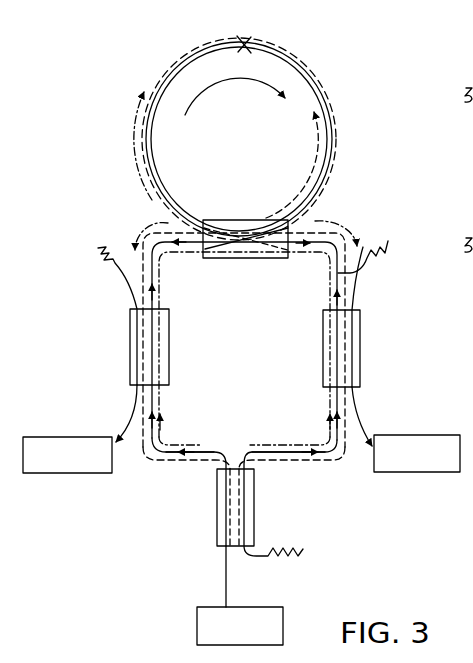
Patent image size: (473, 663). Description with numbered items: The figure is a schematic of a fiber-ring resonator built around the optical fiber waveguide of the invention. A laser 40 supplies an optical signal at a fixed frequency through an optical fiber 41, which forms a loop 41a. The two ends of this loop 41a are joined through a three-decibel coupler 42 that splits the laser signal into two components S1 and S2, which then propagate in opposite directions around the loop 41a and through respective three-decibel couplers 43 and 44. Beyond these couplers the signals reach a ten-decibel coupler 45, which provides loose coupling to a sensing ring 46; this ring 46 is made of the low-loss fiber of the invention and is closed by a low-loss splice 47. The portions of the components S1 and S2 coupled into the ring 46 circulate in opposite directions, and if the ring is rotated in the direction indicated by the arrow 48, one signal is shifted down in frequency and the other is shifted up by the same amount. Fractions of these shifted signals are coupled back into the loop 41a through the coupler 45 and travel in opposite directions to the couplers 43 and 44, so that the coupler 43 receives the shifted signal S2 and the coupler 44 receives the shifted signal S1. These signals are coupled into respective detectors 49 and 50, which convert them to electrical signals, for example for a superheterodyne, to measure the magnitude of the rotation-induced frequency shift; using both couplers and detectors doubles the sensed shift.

The laser 40 is at (283, 607).
The optical fiber 41 is at (228, 585).
The loop 41a is at (363, 247).
The 3-dB coupler 42 is at (254, 516).
The 3-dB coupler 43 is at (169, 324).
The 3-dB coupler 44 is at (323, 349).
The 10-dB coupler 45 is at (257, 258).
The sensing ring 46 is at (322, 99).
The low-loss splice 47 is at (248, 40).
The arrow 48 is at (240, 78).
The detector 49 is at (58, 437).
The detector 50 is at (410, 436).
The signal component S1 is at (203, 444).
The signal component S2 is at (267, 445).